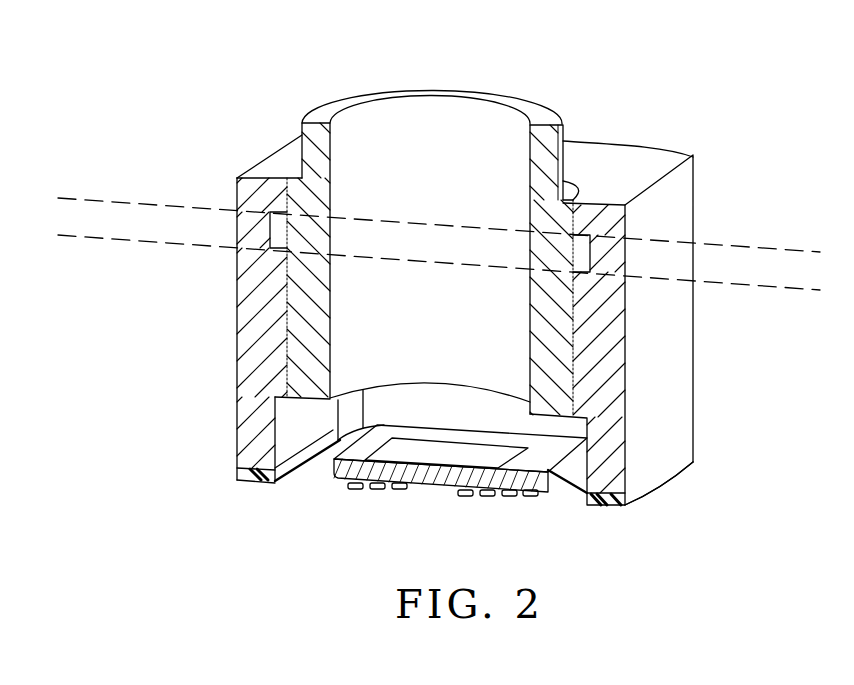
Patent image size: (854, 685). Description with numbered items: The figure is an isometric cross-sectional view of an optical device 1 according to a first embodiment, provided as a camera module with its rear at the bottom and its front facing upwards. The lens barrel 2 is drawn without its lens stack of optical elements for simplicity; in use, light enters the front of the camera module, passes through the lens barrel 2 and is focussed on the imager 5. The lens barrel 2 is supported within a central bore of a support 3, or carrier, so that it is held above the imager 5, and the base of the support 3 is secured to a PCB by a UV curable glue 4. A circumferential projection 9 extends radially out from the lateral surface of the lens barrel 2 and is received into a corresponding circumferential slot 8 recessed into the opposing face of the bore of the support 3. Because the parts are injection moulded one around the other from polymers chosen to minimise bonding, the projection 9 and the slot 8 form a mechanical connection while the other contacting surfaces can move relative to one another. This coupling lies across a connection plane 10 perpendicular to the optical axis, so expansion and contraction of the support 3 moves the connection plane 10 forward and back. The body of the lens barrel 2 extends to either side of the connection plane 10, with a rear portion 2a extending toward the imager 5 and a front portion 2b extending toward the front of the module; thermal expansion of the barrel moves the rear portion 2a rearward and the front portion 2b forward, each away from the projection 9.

The optical device 1 is at (160, 101).
The lens barrel 2 is at (561, 143).
The rear portion 2a is at (550, 378).
The front portion 2b is at (541, 142).
The support 3 is at (607, 330).
The UV curable glue 4 is at (652, 478).
The imager 5 is at (347, 482).
The circumferential slot 8 is at (237, 284).
The circumferential projection 9 is at (281, 230).
The connection plane 10 is at (105, 218).